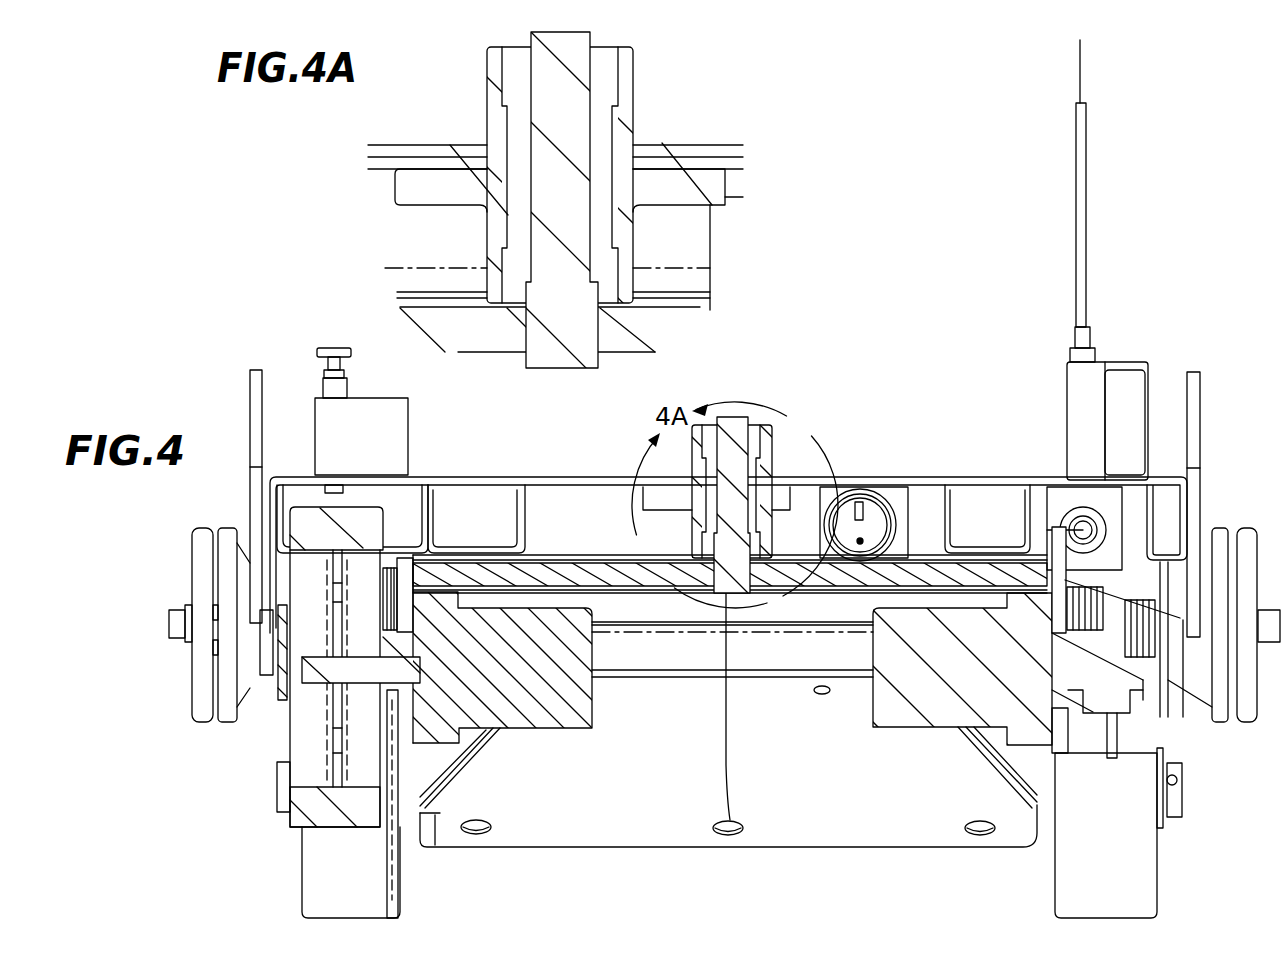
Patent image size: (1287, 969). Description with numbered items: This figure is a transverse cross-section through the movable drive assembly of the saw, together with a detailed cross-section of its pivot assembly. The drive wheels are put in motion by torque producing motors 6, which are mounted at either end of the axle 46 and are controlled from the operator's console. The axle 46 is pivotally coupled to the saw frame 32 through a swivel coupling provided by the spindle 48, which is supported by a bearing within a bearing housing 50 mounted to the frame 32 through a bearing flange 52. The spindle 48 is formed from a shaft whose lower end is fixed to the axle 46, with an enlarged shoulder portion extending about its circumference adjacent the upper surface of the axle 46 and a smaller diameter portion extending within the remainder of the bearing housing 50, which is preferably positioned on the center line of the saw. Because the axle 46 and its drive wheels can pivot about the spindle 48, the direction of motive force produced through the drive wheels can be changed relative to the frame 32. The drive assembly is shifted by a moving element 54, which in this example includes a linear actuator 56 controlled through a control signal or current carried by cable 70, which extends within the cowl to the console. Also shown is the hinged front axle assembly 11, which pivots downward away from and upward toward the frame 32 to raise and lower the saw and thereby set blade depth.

In FIG. 4, the torque producing motor 6 is at (546, 722).
In FIG. 4, the hinged front axle assembly 11 is at (789, 823).
In FIG. 4, the saw frame 32 is at (597, 475).
In FIG. 4, the axle 46 is at (573, 572).
In FIG. 4A, the spindle 48 is at (556, 40).
In FIG. 4, the spindle 48 is at (733, 416).
In FIG. 4A, the bearing housing 50 is at (633, 78).
In FIG. 4, the bearing housing 50 is at (772, 440).
In FIG. 4A, the bearing flange 52 is at (670, 205).
In FIG. 4, the bearing flange 52 is at (823, 467).
In FIG. 4, the moving element 54 is at (1162, 332).
In FIG. 4, the linear actuator 56 is at (1080, 415).
In FIG. 4, the cable 70 is at (1087, 207).